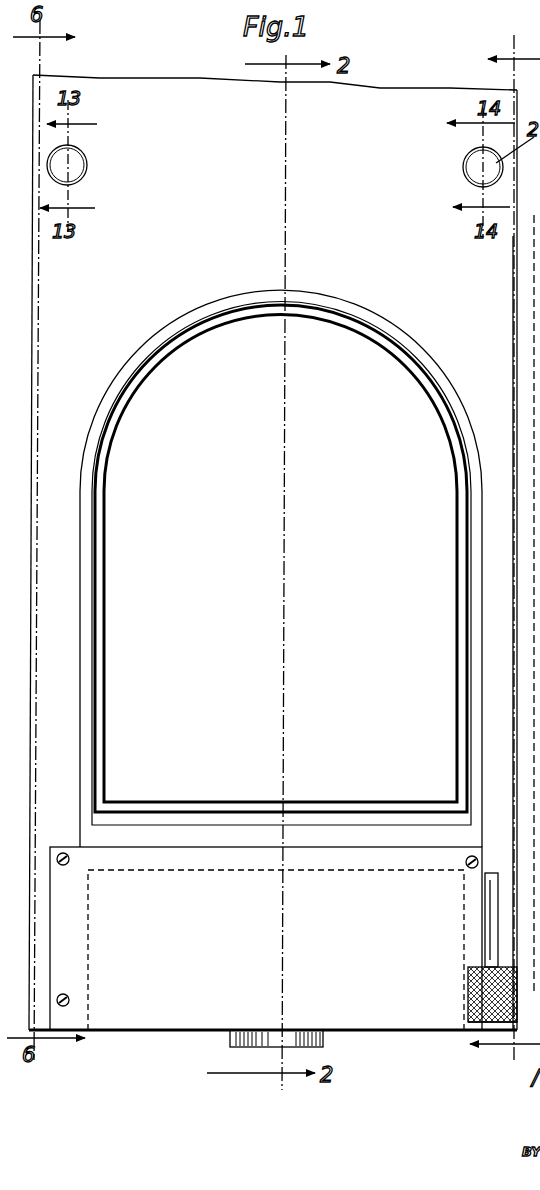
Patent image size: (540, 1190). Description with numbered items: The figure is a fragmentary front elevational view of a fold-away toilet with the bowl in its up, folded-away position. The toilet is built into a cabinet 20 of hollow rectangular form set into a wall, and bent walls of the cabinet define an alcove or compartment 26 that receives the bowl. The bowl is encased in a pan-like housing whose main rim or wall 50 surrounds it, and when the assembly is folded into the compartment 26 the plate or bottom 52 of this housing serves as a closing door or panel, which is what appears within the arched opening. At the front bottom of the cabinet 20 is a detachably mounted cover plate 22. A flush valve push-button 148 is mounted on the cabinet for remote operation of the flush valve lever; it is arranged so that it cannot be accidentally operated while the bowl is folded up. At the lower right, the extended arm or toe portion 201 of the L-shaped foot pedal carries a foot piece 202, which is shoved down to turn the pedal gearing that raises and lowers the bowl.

The cabinet 20 is at (399, 84).
The flush valve push-button 148 is at (80, 156).
The alcove or compartment 26 is at (430, 372).
The main rim or wall of housing 50 is at (453, 437).
The bottom of housing 52 is at (370, 349).
The cover plate 22 is at (177, 1025).
The arm or toe portion 201 is at (489, 905).
The foot piece 202 is at (470, 986).